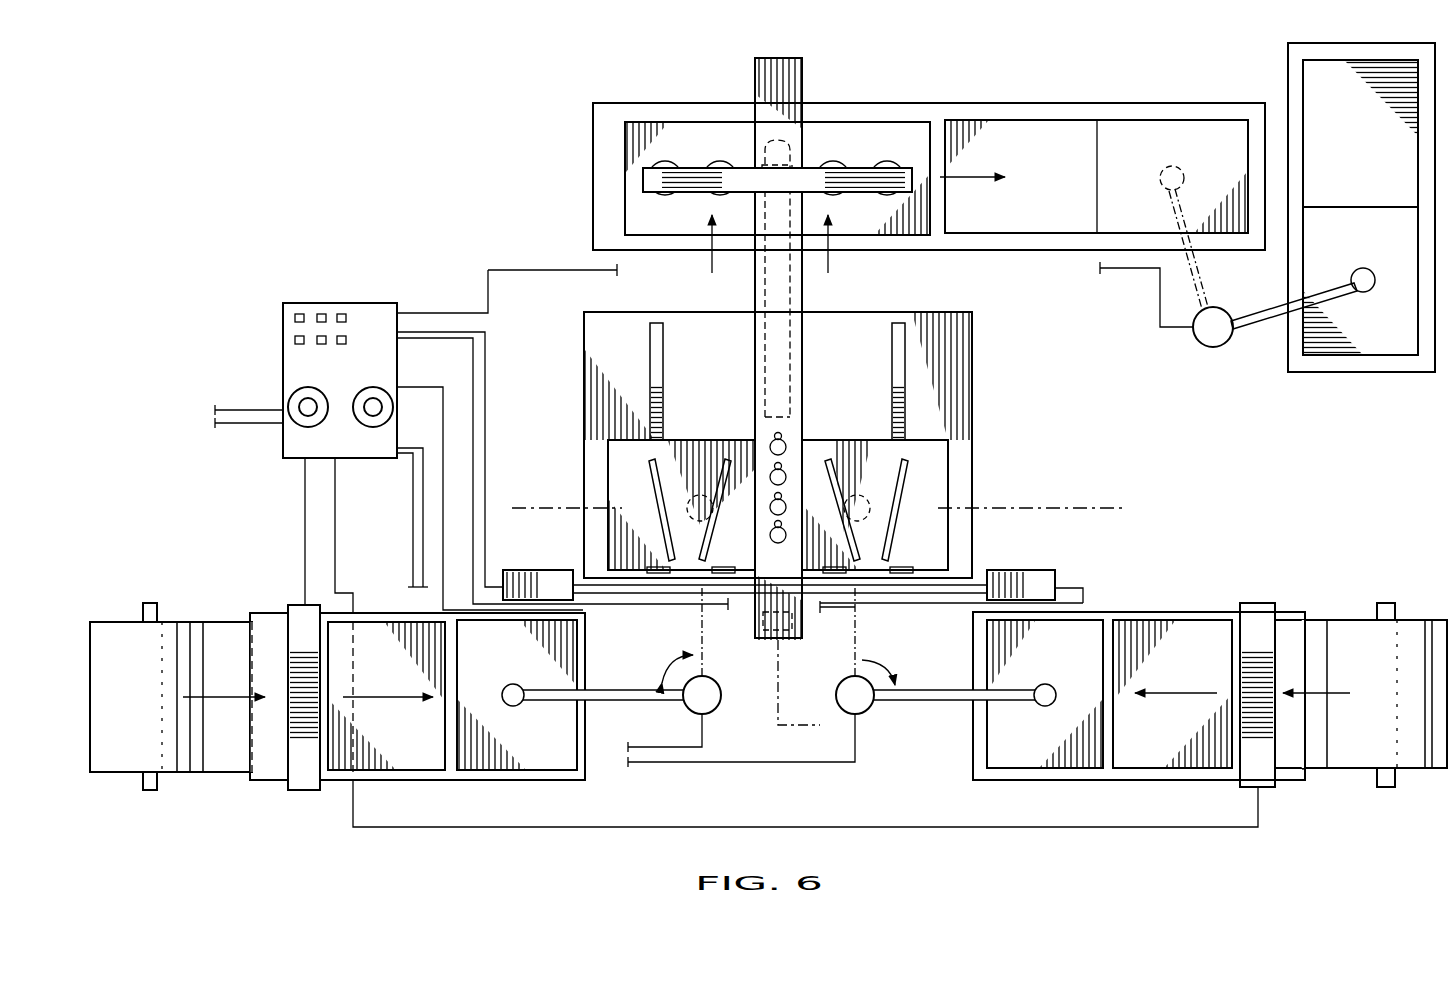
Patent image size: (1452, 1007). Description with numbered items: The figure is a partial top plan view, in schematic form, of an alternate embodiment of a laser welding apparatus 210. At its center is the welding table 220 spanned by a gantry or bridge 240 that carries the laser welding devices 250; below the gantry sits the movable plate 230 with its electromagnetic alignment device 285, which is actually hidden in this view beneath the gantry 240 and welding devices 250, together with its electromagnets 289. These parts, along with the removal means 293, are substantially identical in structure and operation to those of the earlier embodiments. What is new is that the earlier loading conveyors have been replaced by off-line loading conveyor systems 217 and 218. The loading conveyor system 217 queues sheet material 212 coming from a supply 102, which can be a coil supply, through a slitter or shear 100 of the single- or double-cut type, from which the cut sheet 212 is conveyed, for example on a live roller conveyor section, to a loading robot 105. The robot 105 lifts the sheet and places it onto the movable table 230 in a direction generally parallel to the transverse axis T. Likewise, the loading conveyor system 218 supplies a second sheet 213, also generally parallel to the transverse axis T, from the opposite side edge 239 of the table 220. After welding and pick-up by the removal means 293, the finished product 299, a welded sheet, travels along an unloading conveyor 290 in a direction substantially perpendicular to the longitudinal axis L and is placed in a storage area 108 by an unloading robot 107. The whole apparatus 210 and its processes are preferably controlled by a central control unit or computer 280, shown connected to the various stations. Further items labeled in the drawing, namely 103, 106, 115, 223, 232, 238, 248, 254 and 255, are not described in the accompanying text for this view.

The slitter or shear 100 is at (308, 782).
The supply 102 is at (127, 762).
The control line 103 is at (335, 527).
The loading robot 105 is at (770, 655).
The control line 106 is at (423, 497).
The unloading robot 107 is at (1193, 342).
The storage area 108 is at (1338, 372).
The switch 115 is at (1097, 142).
The laser welding apparatus 210 is at (535, 203).
The sheet material 212 is at (1058, 664).
The second sheet 213 is at (525, 659).
The loading conveyor system 217 is at (1185, 612).
The loading conveyor system 218 is at (587, 785).
The welding table 220 is at (977, 385).
The guide rod 223 is at (650, 349).
The movable plate 230 is at (932, 540).
The gripper jaw 232 is at (848, 573).
The gripper housing 238 is at (973, 467).
The opposite side edge 239 is at (583, 393).
The gantry or bridge 240 is at (805, 80).
The rod 248 is at (775, 300).
The laser welding devices 250 is at (804, 438).
The drive unit 254 is at (1003, 570).
The drive unit 255 is at (555, 570).
The central control unit 280 is at (280, 323).
The electromagnetic alignment device 285 is at (755, 463).
The electromagnets 289 is at (905, 475).
The unloading conveyor 290 is at (1013, 255).
The removal means 293 is at (838, 163).
The finished product 299 is at (1027, 108).
The transverse axis T is at (1085, 505).
The longitudinal axis L is at (806, 689).